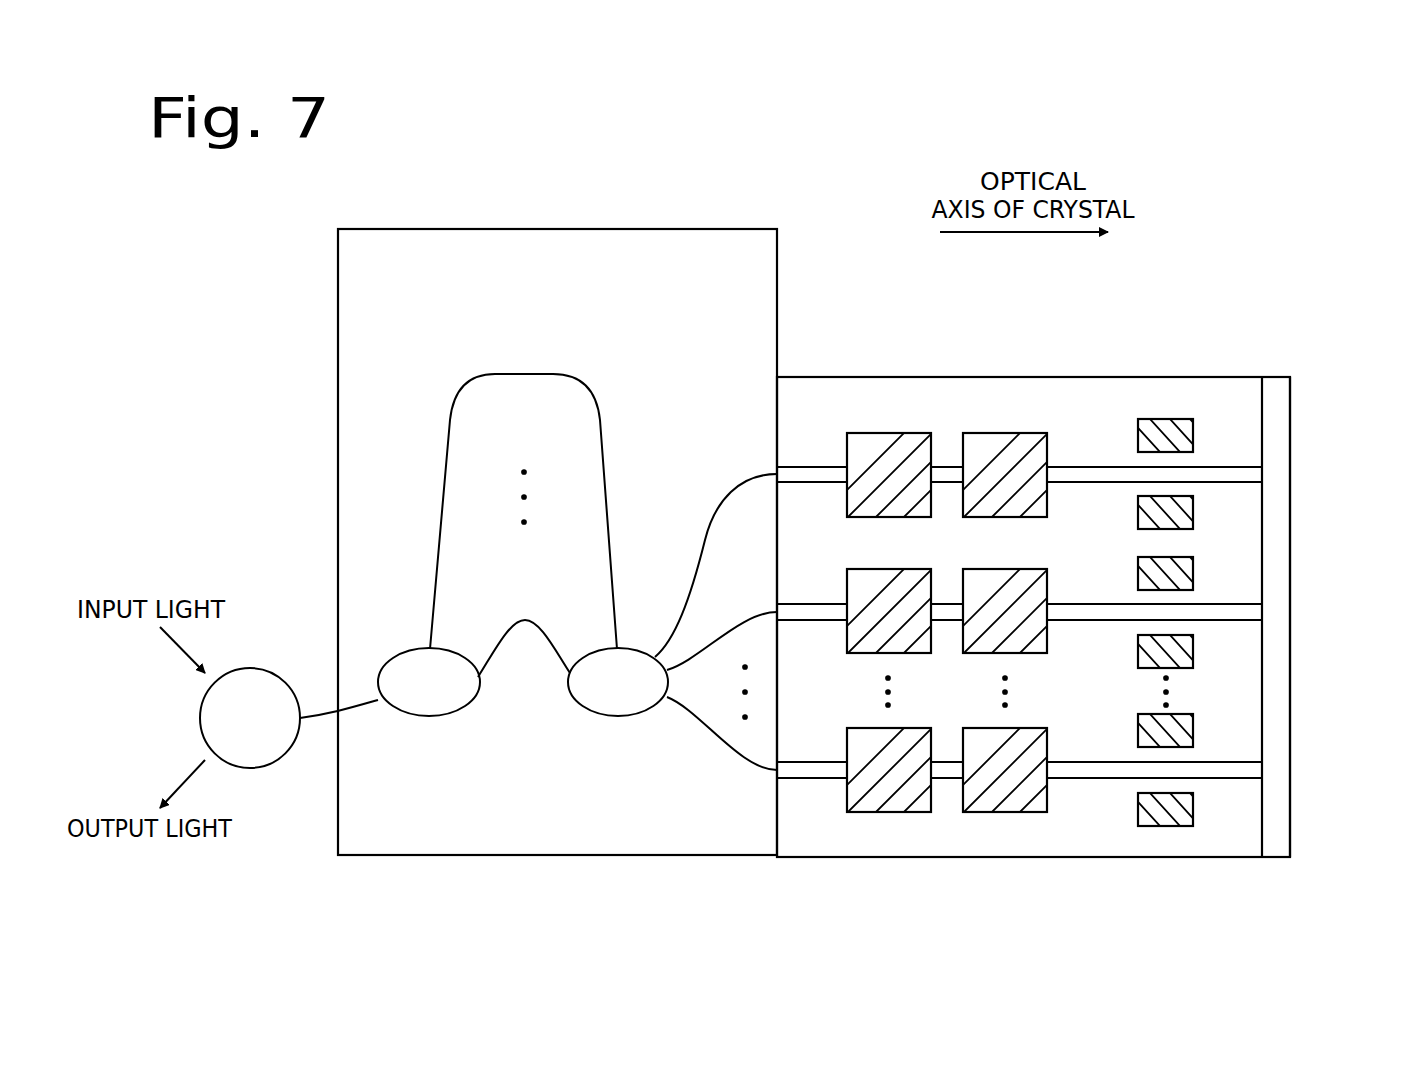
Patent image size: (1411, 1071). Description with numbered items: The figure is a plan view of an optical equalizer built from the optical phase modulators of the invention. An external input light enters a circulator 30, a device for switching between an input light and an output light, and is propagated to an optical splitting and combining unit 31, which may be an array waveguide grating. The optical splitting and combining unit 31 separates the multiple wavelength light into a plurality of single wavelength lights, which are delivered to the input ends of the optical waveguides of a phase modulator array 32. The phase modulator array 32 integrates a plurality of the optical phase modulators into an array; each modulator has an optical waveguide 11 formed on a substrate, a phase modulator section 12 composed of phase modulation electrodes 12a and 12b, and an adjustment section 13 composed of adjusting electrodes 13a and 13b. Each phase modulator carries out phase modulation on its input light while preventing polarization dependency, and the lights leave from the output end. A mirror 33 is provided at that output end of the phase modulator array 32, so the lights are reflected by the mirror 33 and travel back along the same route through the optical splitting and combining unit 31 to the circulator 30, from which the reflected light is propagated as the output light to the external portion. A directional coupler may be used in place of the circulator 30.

The optical waveguide 11 is at (805, 466).
The phase modulator section 12 is at (989, 532).
The phase modulation electrode 12a is at (880, 436).
The phase modulation electrode 12b is at (1047, 562).
The adjustment section 13 is at (1170, 545).
The adjusting electrode 13a is at (1153, 419).
The adjusting electrode 13b is at (1193, 511).
The circulator 30 is at (250, 667).
The optical splitting and combining unit 31 is at (615, 228).
The phase modulator array 32 is at (1246, 377).
The mirror 33 is at (1282, 523).